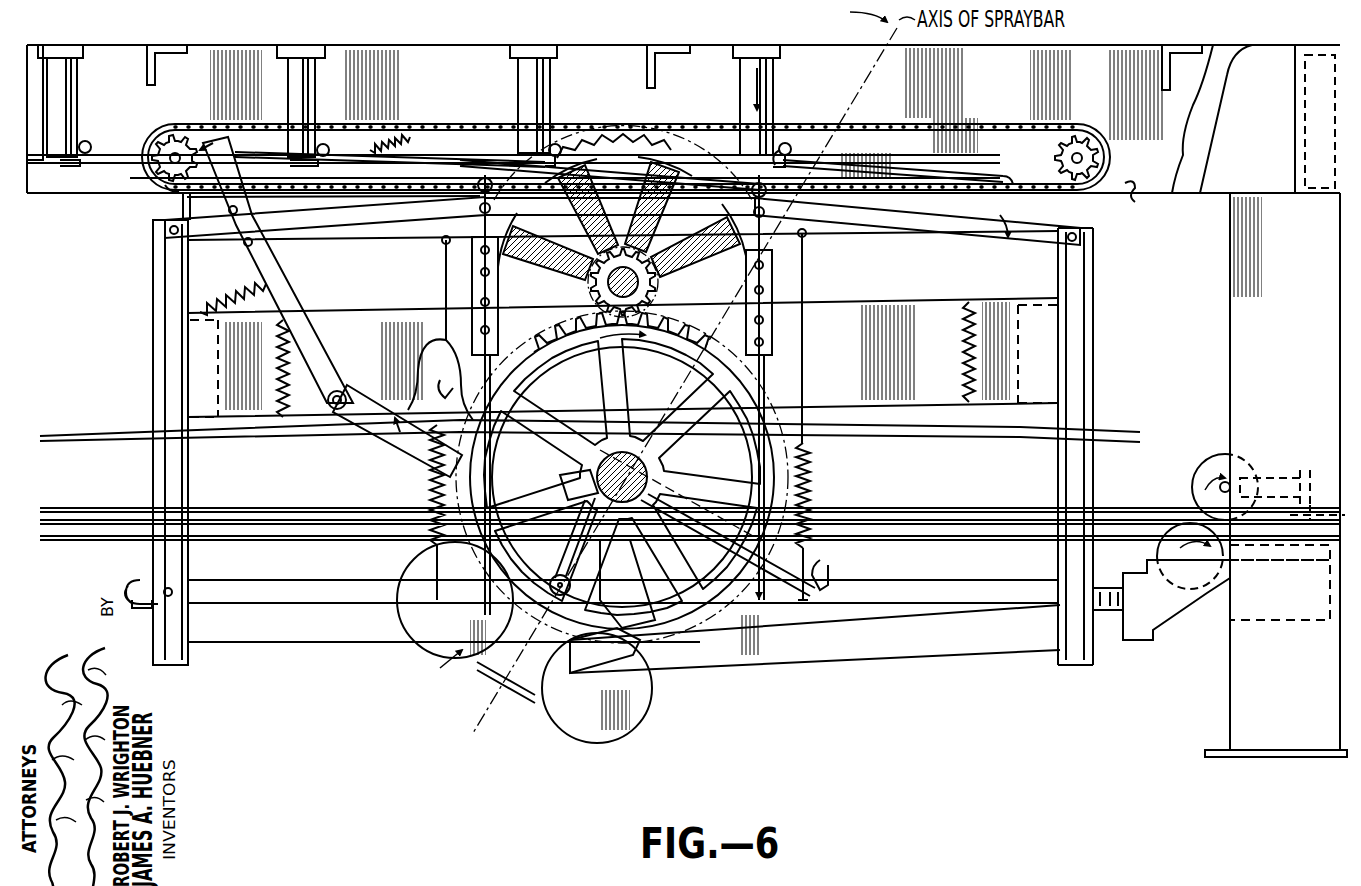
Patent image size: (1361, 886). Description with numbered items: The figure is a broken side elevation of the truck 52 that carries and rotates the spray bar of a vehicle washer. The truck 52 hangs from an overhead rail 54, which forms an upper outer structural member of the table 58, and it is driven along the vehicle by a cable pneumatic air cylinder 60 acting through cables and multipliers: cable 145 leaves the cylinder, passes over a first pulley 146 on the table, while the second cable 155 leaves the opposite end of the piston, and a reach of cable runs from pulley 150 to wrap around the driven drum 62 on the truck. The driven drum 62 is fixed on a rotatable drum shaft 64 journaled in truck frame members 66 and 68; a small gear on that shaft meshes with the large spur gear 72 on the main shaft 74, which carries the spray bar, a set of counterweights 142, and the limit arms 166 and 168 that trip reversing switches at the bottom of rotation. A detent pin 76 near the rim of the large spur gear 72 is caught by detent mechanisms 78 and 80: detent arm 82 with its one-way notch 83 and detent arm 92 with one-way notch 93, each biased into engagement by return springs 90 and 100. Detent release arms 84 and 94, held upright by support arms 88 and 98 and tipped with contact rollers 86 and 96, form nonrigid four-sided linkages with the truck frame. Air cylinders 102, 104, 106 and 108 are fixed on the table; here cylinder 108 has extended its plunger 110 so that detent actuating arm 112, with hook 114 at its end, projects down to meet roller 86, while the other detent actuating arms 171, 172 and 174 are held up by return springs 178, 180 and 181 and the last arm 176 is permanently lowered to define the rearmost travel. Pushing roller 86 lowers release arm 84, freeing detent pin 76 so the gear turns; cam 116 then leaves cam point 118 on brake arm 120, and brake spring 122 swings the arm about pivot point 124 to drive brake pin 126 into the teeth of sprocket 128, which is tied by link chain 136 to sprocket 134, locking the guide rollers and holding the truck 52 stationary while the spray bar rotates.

The truck 52 is at (1104, 301).
The overhead rail 54 is at (1135, 186).
The table 58 is at (1138, 48).
The cable pneumatic air cylinder 60 is at (900, 587).
The driven drum 62 is at (508, 197).
The rotatable drum shaft 64 is at (624, 278).
The truck frame member 66 is at (988, 320).
The truck frame member 68 is at (833, 320).
The large spur gear 72 is at (677, 304).
The main shaft 74 is at (614, 412).
The detent pin 76 is at (557, 576).
The detent mechanism 78 is at (800, 662).
The detent mechanism 80 is at (440, 668).
The detent arm 82 is at (860, 655).
The one-way notch 83 is at (560, 702).
The detent release arm 84 is at (764, 360).
The contact roller 86 is at (746, 212).
The support arm 88 is at (915, 216).
The return spring 90 is at (810, 482).
The detent arm 92 is at (503, 644).
The one-way notch 93 is at (632, 587).
The detent release arm 94 is at (455, 322).
The contact roller 96 is at (485, 176).
The support arm 98 is at (407, 217).
The return spring 100 is at (436, 486).
The air cylinder 102 is at (88, 65).
The air cylinder 104 is at (320, 66).
The air cylinder 106 is at (550, 76).
The air cylinder 108 is at (775, 76).
The plunger 110 is at (745, 160).
The detent actuating arm 112 is at (664, 163).
The hook 114 is at (782, 150).
The cam 116 is at (562, 482).
The cam point 118 is at (672, 492).
The brake arm 120 is at (352, 418).
The brake spring 122 is at (234, 290).
The pivot point 124 is at (337, 392).
The brake pin 126 is at (166, 190).
The sprocket 128 is at (186, 134).
The sprocket 134 is at (1076, 146).
The link chain 136 is at (1034, 132).
The counterweights 142 is at (420, 662).
The cable 145 is at (1100, 609).
The first pulley 146 is at (1216, 553).
The pulley 150 is at (1212, 481).
The second cable 155 is at (130, 588).
The limit arm 166 is at (825, 578).
The limit arm 168 is at (445, 398).
The detent actuating arm 171 is at (46, 186).
The detent actuating arm 172 is at (187, 197).
The detent actuating arm 174 is at (540, 160).
The detent actuating arm 176 is at (890, 160).
The return spring 178 is at (128, 154).
The return spring 180 is at (403, 136).
The return spring 181 is at (618, 163).